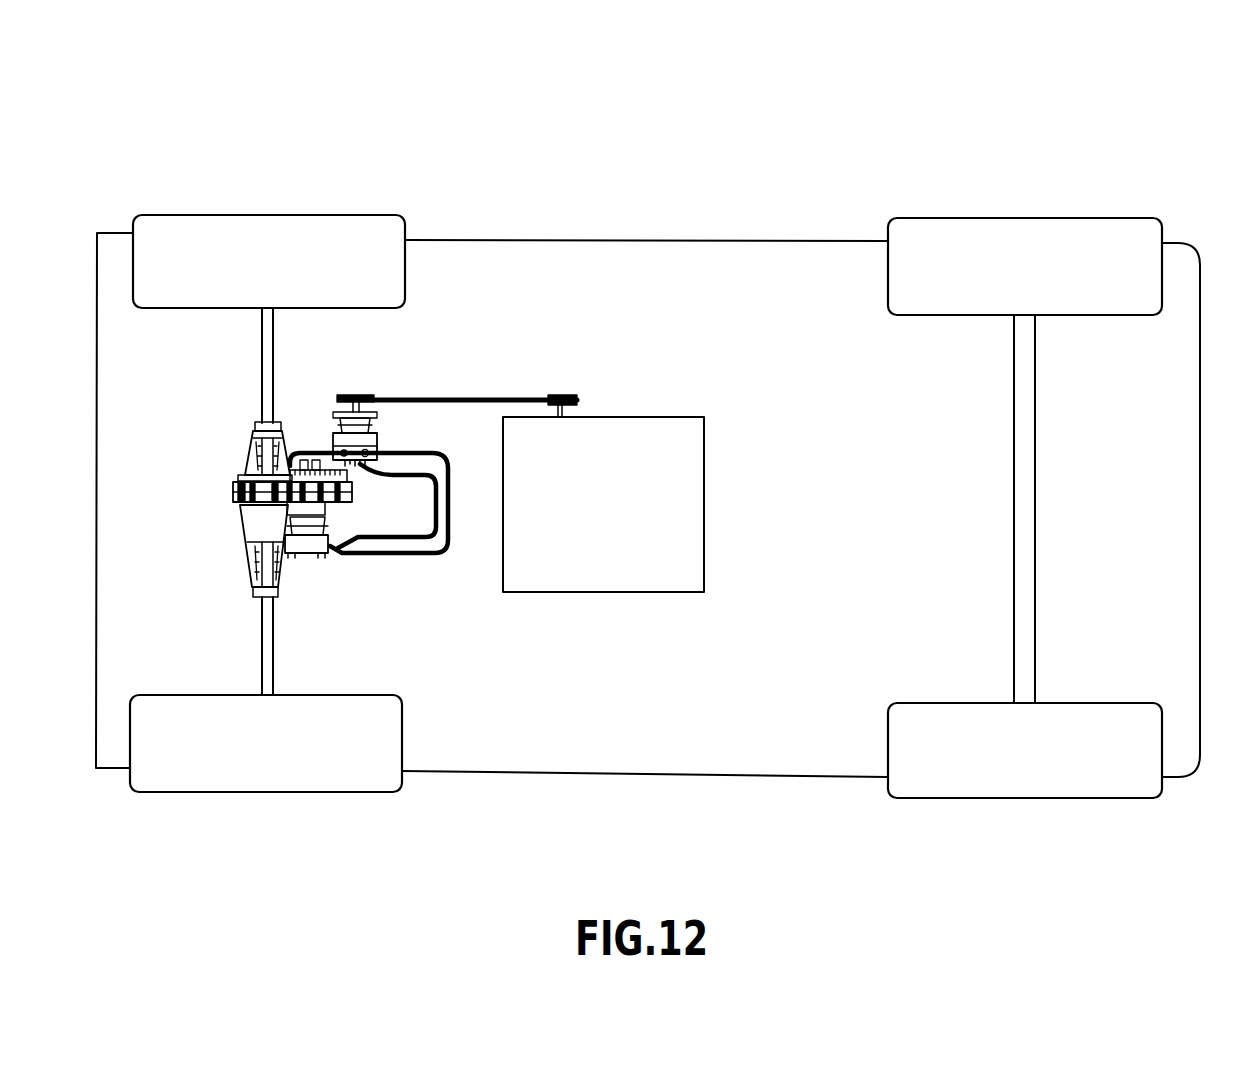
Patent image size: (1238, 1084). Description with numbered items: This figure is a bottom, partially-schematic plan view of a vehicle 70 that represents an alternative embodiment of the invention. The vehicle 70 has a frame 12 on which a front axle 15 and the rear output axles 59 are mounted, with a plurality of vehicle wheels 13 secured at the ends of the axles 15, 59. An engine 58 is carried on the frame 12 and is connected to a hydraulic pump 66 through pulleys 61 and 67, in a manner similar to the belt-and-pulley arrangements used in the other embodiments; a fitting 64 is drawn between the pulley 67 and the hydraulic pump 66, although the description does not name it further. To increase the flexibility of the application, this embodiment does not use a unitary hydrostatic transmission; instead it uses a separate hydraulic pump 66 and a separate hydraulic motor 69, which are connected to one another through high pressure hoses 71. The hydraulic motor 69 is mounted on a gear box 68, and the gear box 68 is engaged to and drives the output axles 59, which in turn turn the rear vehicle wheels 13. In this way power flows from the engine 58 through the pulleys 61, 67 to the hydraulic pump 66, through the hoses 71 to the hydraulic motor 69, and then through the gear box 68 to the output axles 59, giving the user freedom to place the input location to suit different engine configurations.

The frame 12 is at (648, 240).
The vehicle wheels 13 is at (288, 281).
The front axle 15 is at (1036, 512).
The engine 58 is at (626, 522).
The output axles 59 is at (262, 345).
The pulley 61 is at (576, 398).
The actuator fitting 64 is at (340, 400).
The hydraulic pump 66 is at (377, 443).
The pulley 67 is at (347, 397).
The gear box 68 is at (240, 514).
The hydraulic motor 69 is at (305, 562).
The vehicle 70 is at (771, 193).
The high pressure hoses 71 is at (306, 450).